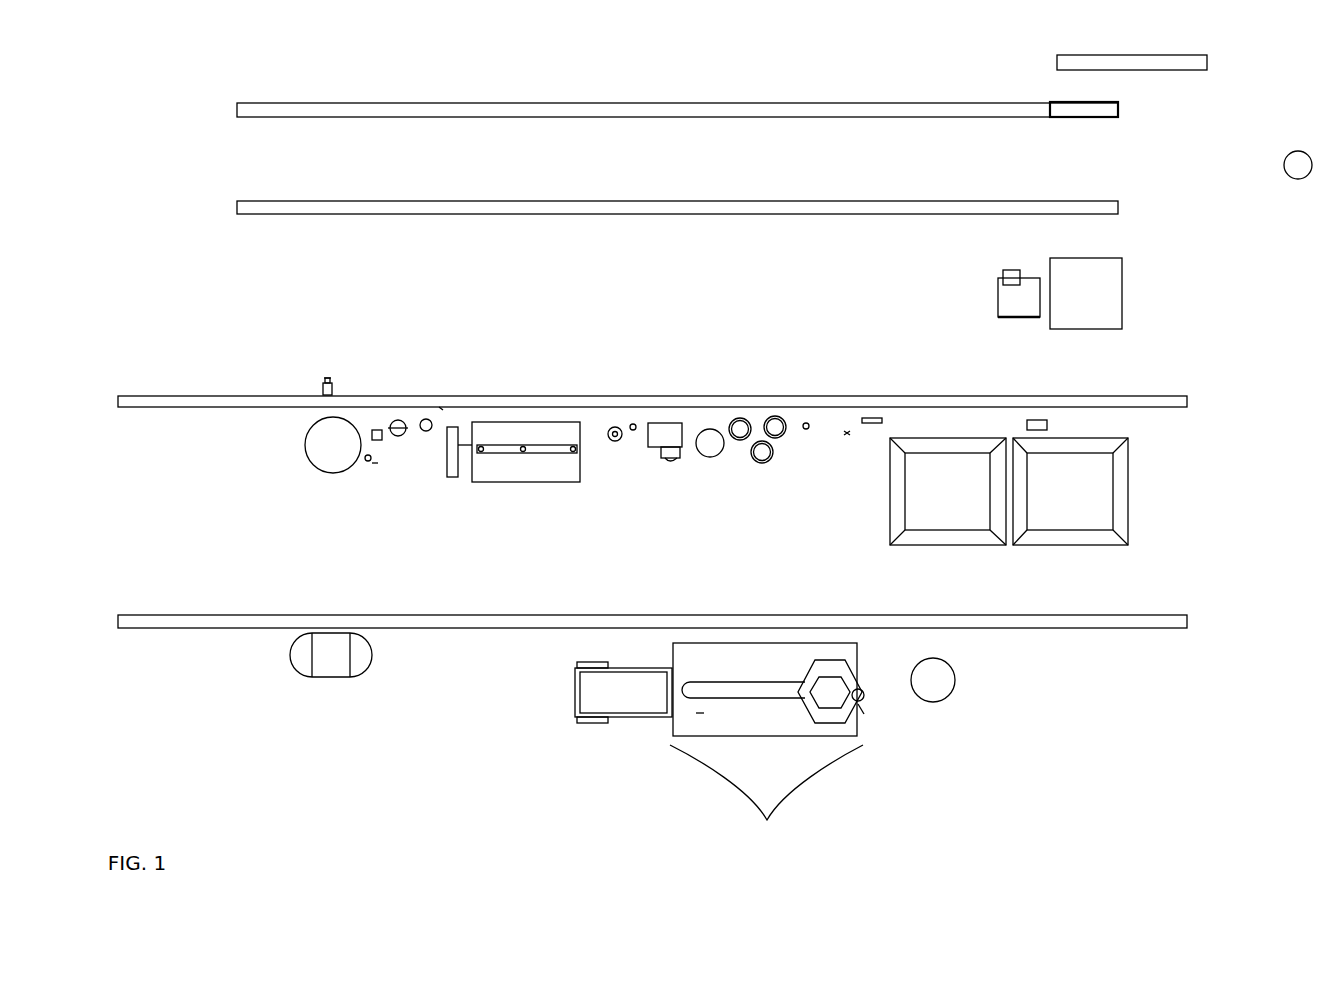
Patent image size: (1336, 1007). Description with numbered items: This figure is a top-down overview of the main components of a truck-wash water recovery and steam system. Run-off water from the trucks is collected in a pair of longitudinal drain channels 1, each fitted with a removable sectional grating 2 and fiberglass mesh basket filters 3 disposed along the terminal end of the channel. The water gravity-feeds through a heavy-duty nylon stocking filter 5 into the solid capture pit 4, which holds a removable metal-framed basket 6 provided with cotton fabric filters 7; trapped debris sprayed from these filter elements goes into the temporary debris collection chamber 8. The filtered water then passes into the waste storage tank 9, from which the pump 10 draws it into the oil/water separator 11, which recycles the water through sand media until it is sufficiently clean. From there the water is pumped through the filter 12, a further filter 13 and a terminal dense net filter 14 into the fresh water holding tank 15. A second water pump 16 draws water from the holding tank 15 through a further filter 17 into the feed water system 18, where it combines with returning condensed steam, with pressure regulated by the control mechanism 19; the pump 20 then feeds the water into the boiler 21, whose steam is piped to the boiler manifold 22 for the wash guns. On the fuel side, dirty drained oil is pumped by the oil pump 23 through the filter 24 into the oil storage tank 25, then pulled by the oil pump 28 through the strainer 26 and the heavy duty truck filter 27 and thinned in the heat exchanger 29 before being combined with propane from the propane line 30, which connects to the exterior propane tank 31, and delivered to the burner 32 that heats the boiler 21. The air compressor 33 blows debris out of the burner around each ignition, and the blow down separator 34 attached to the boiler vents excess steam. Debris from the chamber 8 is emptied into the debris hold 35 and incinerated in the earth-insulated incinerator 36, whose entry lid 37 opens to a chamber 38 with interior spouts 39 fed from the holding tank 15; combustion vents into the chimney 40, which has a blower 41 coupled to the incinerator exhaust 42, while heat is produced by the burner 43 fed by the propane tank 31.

The drain channels 1 is at (803, 116).
The removable sectional grating 2 is at (1100, 58).
The fiberglass mesh basket filters 3 is at (1080, 113).
The solid capture pit 4 is at (1078, 308).
The nylon stocking filter 5 is at (1002, 269).
The metal-framed basket 6 is at (1010, 300).
The cotton fabric filters 7 is at (1000, 318).
The temporary debris collection chamber 8 is at (1298, 180).
The waste storage tank 9 is at (1070, 491).
The pump 10 is at (1034, 422).
The oil/water separator 11 is at (739, 441).
The filter 12 is at (774, 418).
The filter 13 is at (805, 430).
The dense net filter 14 is at (847, 436).
The fresh water holding tank 15 is at (948, 491).
The water pump 16 is at (870, 418).
The filter 17 is at (636, 424).
The feed water system 18 is at (660, 440).
The control mechanism 19 is at (668, 456).
The pump 20 is at (676, 461).
The boiler 21 is at (548, 470).
The boiler manifold 22 is at (537, 447).
The oil pump 23 is at (323, 389).
The filter 24 is at (327, 381).
The oil storage tank 25 is at (322, 452).
The strainer 26 is at (367, 462).
The heavy duty truck filter 27 is at (376, 466).
The oil pump 28 is at (380, 440).
The heat exchanger 29 is at (426, 418).
The propane line 30 is at (441, 406).
The propane tank 31 is at (329, 668).
The burner 32 is at (452, 477).
The air compressor 33 is at (398, 419).
The blow down separator 34 is at (612, 426).
The debris hold 35 is at (948, 685).
The incinerator 36 is at (766, 798).
The entry lid 37 is at (866, 713).
The chamber 38 is at (736, 722).
The interior spouts 39 is at (700, 713).
The chimney 40 is at (697, 689).
The blower 41 is at (828, 661).
The incinerator exhaust 42 is at (862, 689).
The burner 43 is at (592, 690).